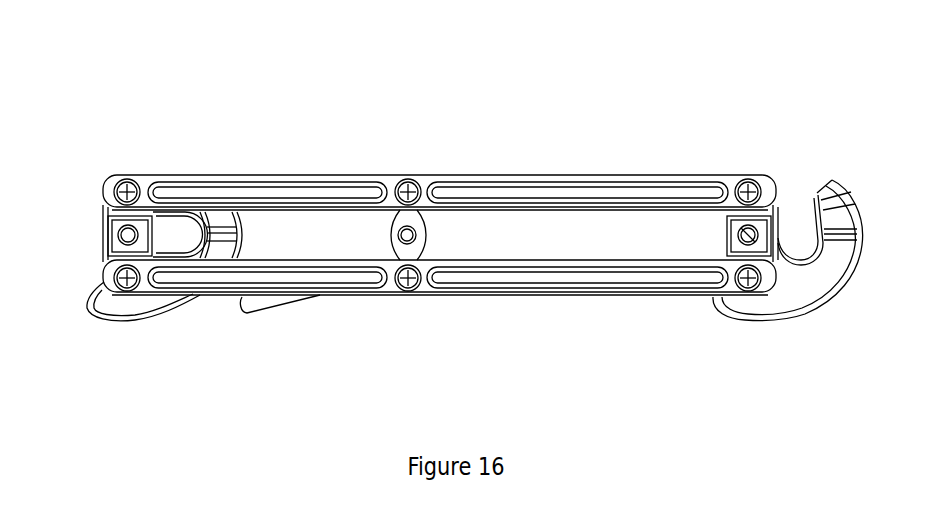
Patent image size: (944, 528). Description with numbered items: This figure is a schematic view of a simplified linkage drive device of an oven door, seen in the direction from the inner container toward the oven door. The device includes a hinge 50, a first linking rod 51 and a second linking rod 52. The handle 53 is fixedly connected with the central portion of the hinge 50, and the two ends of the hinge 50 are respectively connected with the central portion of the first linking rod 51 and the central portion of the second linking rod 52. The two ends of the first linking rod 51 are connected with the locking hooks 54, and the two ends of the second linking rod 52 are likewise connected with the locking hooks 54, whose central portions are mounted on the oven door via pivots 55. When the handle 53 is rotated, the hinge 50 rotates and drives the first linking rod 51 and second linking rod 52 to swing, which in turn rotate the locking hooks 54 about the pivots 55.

The hinge 50 is at (290, 260).
The first linking rod 51 is at (320, 176).
The second linking rod 52 is at (648, 293).
The handle 53 is at (260, 303).
The locking hook 54 is at (134, 304).
The pivot 55 is at (118, 232).